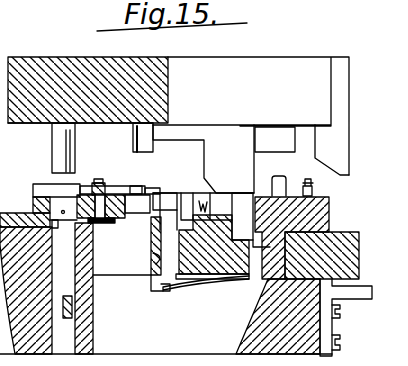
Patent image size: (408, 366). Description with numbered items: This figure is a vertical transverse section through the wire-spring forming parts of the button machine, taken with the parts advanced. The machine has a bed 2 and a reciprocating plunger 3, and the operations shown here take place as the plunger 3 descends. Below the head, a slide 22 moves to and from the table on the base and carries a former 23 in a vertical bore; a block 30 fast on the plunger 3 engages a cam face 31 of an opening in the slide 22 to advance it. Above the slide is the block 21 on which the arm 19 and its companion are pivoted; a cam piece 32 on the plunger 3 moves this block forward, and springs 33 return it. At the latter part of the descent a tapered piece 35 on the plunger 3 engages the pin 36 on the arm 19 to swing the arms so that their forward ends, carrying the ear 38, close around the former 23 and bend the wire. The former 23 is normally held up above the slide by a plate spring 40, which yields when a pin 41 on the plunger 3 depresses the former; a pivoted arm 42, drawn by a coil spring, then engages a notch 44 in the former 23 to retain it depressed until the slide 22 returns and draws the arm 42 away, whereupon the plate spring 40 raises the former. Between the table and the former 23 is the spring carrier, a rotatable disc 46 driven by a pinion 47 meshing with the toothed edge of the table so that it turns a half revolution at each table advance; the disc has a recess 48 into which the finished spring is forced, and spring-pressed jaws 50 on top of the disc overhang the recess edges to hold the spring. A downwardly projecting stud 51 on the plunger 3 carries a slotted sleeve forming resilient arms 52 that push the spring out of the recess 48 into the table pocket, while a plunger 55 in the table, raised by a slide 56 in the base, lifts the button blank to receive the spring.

The bed 2 is at (20, 345).
The plunger 3 is at (178, 116).
The arm 19 is at (208, 196).
The block 21 is at (330, 212).
The slide 22 is at (335, 237).
The former 23 is at (172, 206).
The block 30 is at (206, 190).
The cam face 31 is at (249, 268).
The cam piece 32 is at (341, 148).
The spring 33 is at (207, 213).
The tapered piece 35 is at (275, 139).
The pin 36 is at (274, 178).
The ear 38 is at (157, 187).
The plate spring 40 is at (201, 283).
The pin 41 is at (118, 144).
The pivoted arm 42 is at (154, 281).
The notch 44 is at (153, 256).
The rotatable disc 46 is at (98, 183).
The pinion 47 is at (113, 224).
The recess 48 is at (137, 204).
The spring-pressed jaw 50 is at (137, 187).
The stud 51 is at (53, 144).
The resilient arm 52 is at (38, 202).
The plunger 55 is at (67, 336).
The slide 56 is at (72, 313).